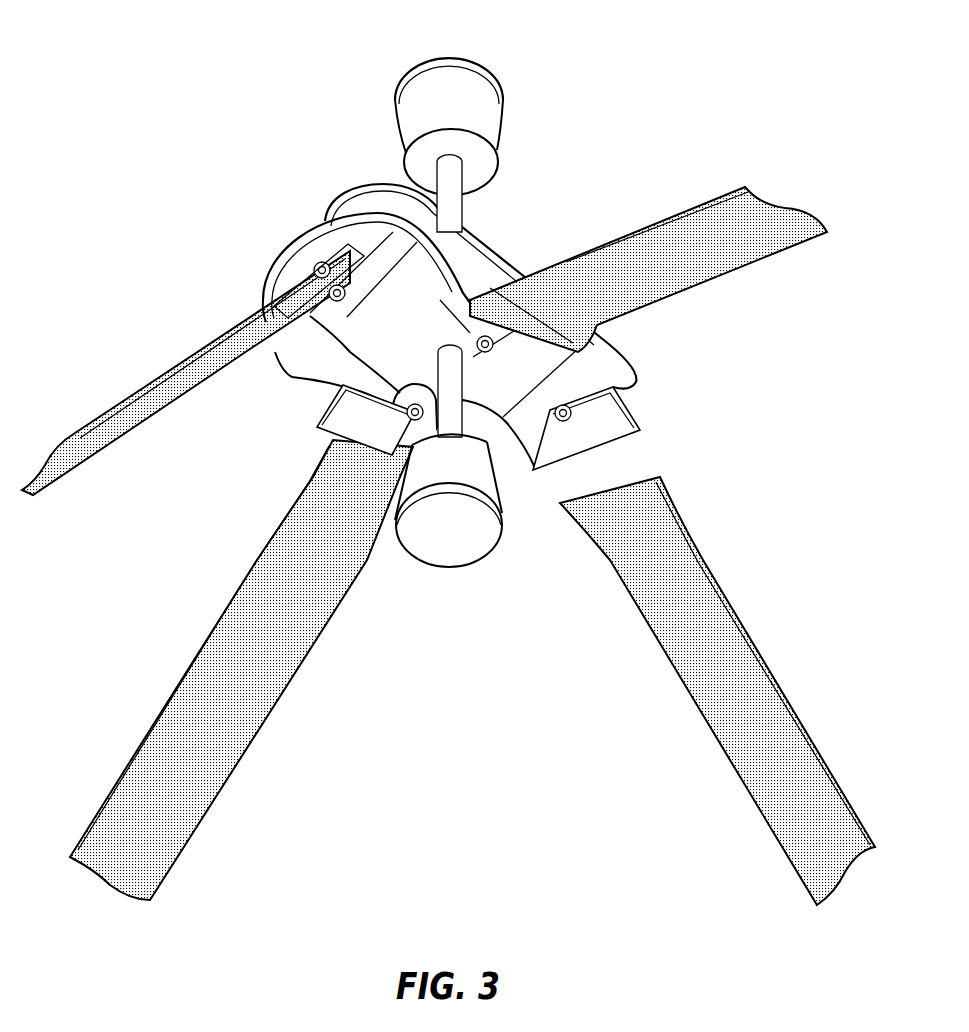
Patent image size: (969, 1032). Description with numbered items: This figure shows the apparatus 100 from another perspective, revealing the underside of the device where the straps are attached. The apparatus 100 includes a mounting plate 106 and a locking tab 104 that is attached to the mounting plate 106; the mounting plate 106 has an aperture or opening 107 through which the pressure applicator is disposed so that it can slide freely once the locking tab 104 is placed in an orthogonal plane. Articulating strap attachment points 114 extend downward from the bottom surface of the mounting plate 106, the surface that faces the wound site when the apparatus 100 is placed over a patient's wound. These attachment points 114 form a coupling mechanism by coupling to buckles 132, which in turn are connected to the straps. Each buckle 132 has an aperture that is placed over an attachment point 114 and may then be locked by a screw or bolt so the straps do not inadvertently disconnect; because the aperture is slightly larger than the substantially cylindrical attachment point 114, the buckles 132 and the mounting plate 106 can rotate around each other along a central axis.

The apparatus 100 is at (612, 50).
The locking tab 104 is at (372, 184).
The mounting plate 106 is at (300, 247).
The mounting plate aperture or opening 107 is at (427, 333).
The articulating strap attachment point 114 is at (345, 292).
The buckle 132 is at (650, 410).